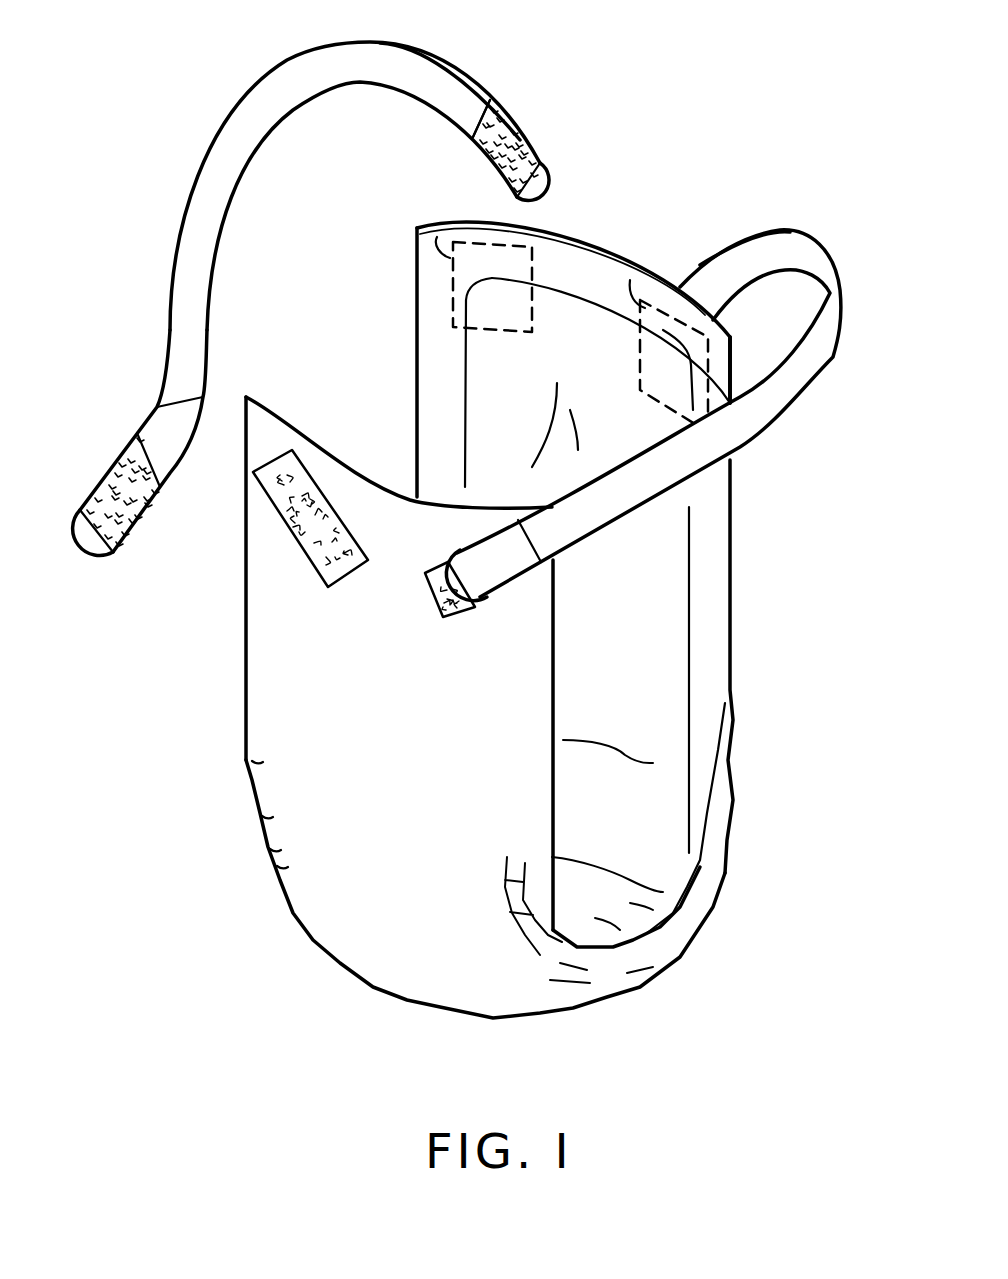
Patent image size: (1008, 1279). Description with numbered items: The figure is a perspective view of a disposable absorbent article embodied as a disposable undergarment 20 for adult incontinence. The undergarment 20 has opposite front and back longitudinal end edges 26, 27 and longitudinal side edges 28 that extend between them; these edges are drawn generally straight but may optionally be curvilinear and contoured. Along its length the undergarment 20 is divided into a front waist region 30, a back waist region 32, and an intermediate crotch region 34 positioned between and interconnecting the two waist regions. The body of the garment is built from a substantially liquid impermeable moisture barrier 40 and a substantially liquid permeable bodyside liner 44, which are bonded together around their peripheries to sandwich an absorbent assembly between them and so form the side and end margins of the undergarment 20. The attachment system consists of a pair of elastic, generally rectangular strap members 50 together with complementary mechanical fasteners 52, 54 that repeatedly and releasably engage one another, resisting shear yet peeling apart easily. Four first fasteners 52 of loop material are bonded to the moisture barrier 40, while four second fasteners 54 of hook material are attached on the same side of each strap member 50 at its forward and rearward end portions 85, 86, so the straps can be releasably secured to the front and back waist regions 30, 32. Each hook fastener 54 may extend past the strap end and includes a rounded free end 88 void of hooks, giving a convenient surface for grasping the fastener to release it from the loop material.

The disposable undergarment 20 is at (795, 563).
The front longitudinal end edge 26 is at (305, 430).
The back longitudinal end edge 27 is at (568, 233).
The longitudinal side edges 28 is at (246, 755).
The front waist region 30 is at (275, 650).
The back waist region 32 is at (612, 238).
The crotch region 34 is at (513, 1035).
The moisture barrier 40 is at (495, 767).
The bodyside liner 44 is at (670, 776).
The strap members 50 is at (237, 100).
The first fasteners 52 is at (436, 235).
The second fasteners 54 is at (110, 470).
The forward end portion 85 is at (152, 408).
The rearward end portion 86 is at (472, 95).
The free end 88 is at (90, 545).